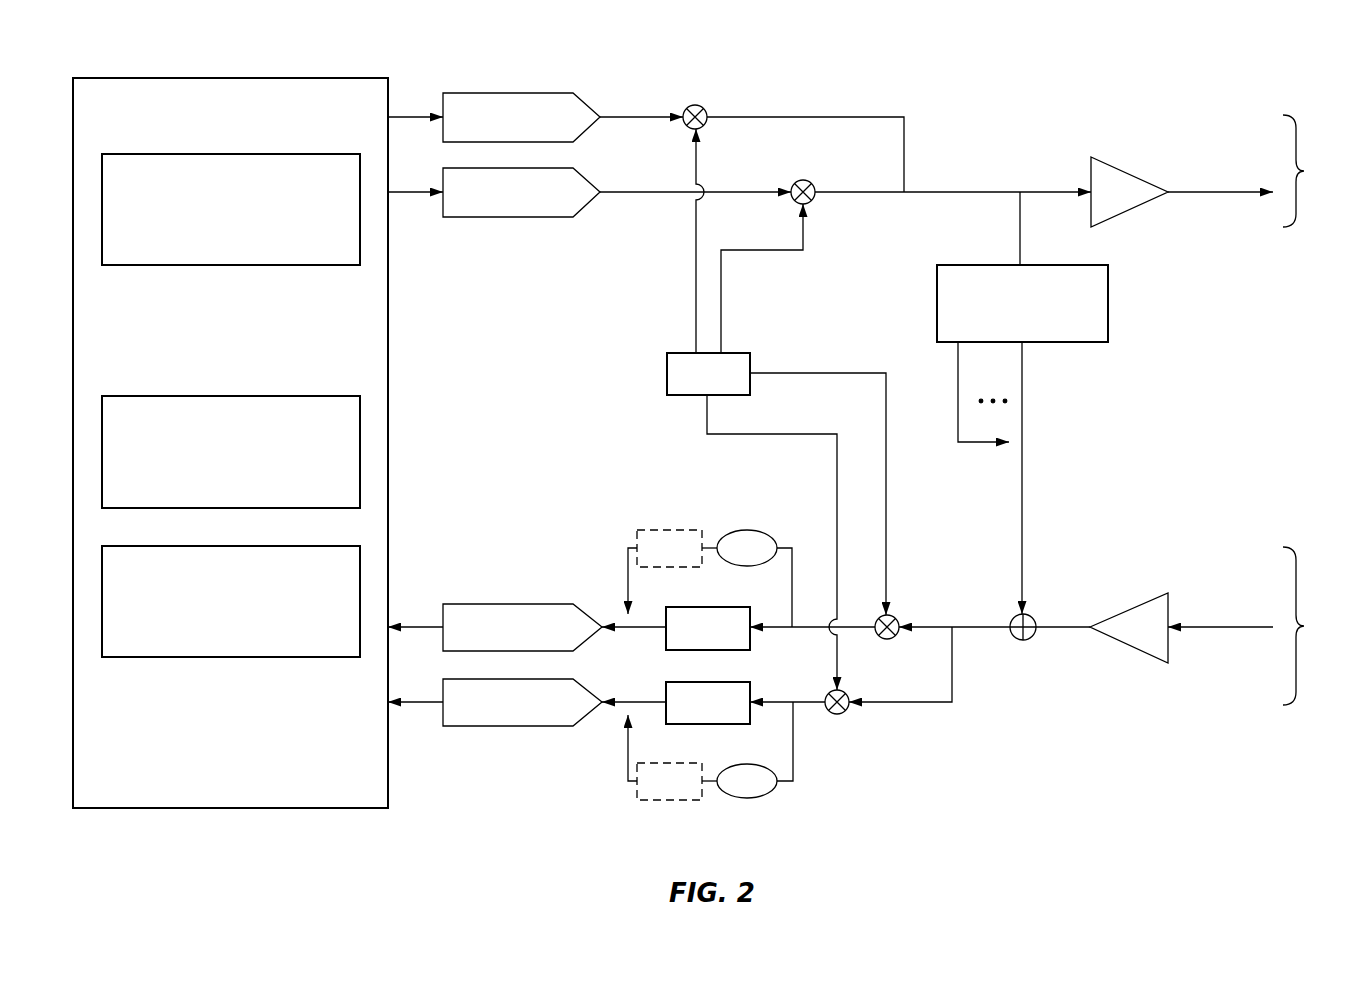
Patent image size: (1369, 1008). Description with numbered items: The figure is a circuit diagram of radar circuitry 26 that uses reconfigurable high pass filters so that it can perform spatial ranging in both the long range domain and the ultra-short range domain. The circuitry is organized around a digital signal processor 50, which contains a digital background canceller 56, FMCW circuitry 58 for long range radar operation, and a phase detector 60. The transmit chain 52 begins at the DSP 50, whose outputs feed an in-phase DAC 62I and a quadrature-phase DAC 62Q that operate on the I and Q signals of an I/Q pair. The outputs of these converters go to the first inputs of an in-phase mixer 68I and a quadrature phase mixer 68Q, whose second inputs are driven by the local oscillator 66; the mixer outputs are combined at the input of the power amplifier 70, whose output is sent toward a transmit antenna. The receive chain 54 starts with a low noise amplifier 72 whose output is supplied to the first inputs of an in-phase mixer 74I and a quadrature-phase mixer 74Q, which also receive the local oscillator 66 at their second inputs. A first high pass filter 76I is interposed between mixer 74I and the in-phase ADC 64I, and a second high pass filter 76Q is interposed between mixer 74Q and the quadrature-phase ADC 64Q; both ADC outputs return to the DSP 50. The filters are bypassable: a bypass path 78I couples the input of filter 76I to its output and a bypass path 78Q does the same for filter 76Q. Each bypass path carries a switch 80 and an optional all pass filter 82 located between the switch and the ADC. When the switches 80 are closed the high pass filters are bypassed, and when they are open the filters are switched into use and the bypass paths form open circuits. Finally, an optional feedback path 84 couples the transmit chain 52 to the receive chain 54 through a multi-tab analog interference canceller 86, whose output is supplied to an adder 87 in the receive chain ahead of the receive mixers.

The radar circuitry 26 is at (1205, 70).
The digital signal processor 50 is at (232, 78).
The transmit chain 52 is at (1249, 171).
The receive chain 54 is at (1249, 626).
The digital background canceller 56 is at (232, 265).
The FMCW circuitry 58 is at (232, 396).
The phase detector 60 is at (232, 657).
The in-phase DAC 62I is at (515, 93).
The quadrature-phase DAC 62Q is at (515, 217).
The in-phase ADC 64I is at (515, 604).
The quadrature-phase ADC 64Q is at (515, 726).
The local oscillator 66 is at (667, 373).
The in-phase mixer 68I is at (695, 105).
The quadrature phase mixer 68Q is at (812, 203).
The power amplifier 70 is at (1130, 157).
The low noise amplifier 72 is at (1130, 593).
The in-phase mixer 74I is at (898, 617).
The quadrature-phase mixer 74Q is at (845, 692).
The first high pass filter 76I is at (672, 652).
The second high pass filter 76Q is at (730, 682).
The bypass path 78I is at (792, 545).
The bypass path 78Q is at (781, 788).
The switch 80 is at (747, 530).
The all pass filter 82 is at (671, 530).
The feedback path 84 is at (1022, 388).
The multi-tab analog interference canceller 86 is at (1108, 305).
The adder 87 is at (1023, 640).